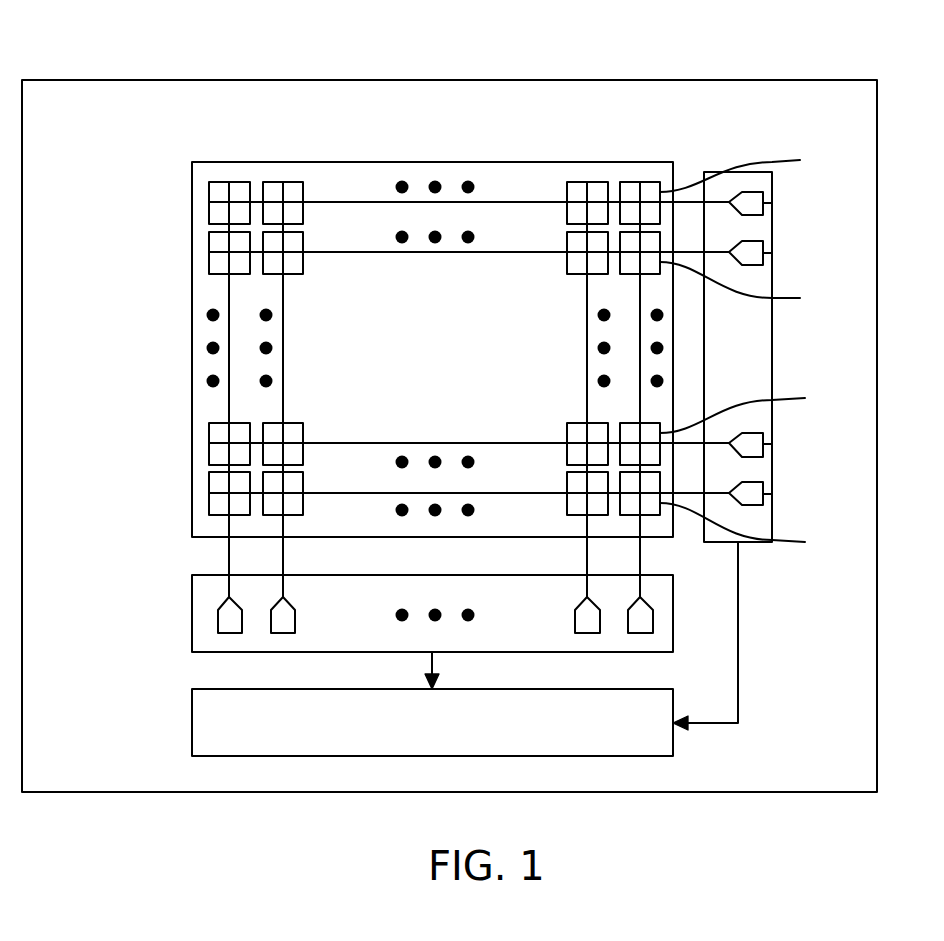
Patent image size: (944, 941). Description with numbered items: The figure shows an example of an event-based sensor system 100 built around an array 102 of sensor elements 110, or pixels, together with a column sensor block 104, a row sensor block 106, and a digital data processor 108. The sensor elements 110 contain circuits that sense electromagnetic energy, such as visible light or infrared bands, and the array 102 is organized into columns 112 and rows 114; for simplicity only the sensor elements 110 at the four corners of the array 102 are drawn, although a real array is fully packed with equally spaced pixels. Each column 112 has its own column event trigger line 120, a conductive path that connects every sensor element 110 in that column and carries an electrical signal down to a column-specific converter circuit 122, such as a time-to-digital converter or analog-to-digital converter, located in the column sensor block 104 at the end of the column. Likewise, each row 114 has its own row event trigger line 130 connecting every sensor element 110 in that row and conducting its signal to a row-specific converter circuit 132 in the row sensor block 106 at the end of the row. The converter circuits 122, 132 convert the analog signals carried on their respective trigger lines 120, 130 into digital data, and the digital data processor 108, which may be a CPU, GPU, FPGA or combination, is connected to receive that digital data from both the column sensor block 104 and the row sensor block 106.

The sensor system 100 is at (448, 80).
The array 102 is at (362, 162).
The column sensor block 104 is at (192, 645).
The row sensor block 106 is at (772, 355).
The digital data processor 108 is at (192, 722).
The sensor elements 110 is at (209, 192).
The columns 112 is at (218, 148).
The rows 114 is at (118, 203).
The column event trigger lines 120 is at (229, 332).
The column-specific converter circuit 122 is at (218, 620).
The row event trigger lines 130 is at (450, 202).
The row-specific converter circuit 132 is at (772, 203).